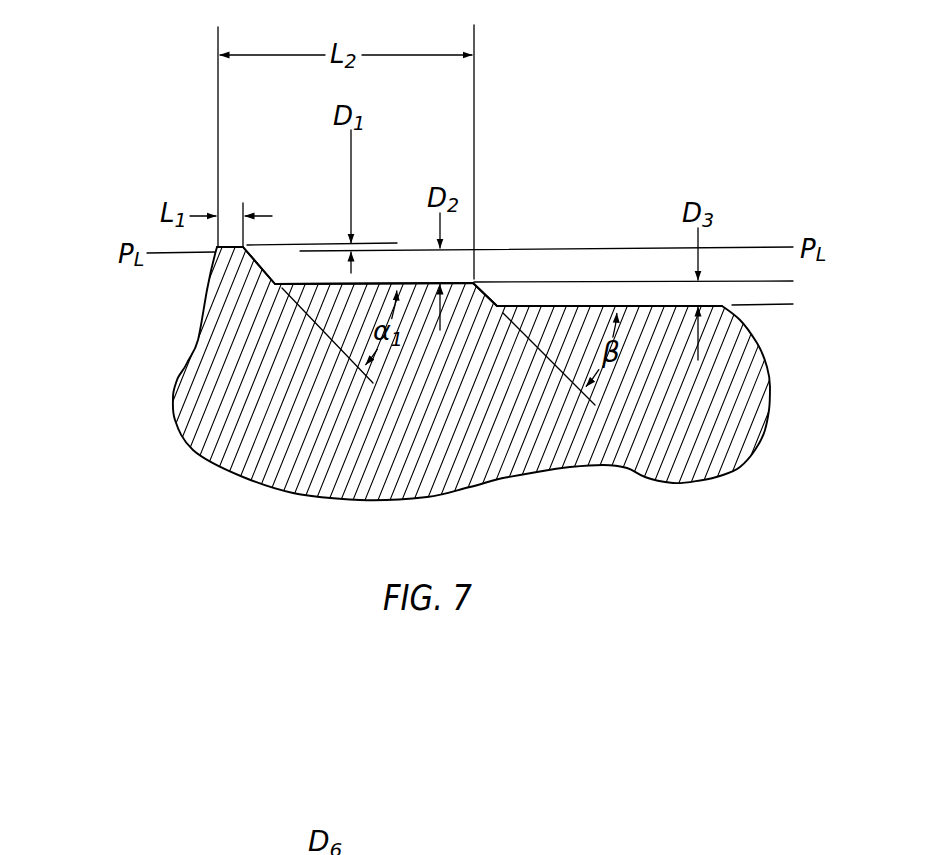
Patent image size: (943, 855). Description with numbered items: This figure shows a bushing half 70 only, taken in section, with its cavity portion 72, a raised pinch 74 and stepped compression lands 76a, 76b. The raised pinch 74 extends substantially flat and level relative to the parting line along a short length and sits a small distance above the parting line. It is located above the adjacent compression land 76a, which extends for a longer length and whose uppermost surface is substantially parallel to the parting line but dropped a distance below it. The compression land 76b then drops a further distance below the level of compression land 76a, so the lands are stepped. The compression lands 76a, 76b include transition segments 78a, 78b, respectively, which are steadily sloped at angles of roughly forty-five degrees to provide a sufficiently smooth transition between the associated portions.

The bushing half 70 is at (97, 83).
The cavity portion 72 is at (193, 341).
The raised pinch 74 is at (254, 247).
The compression land 76a is at (368, 281).
The compression land 76b is at (578, 304).
The transition segment 78a is at (268, 275).
The transition segment 78b is at (488, 298).